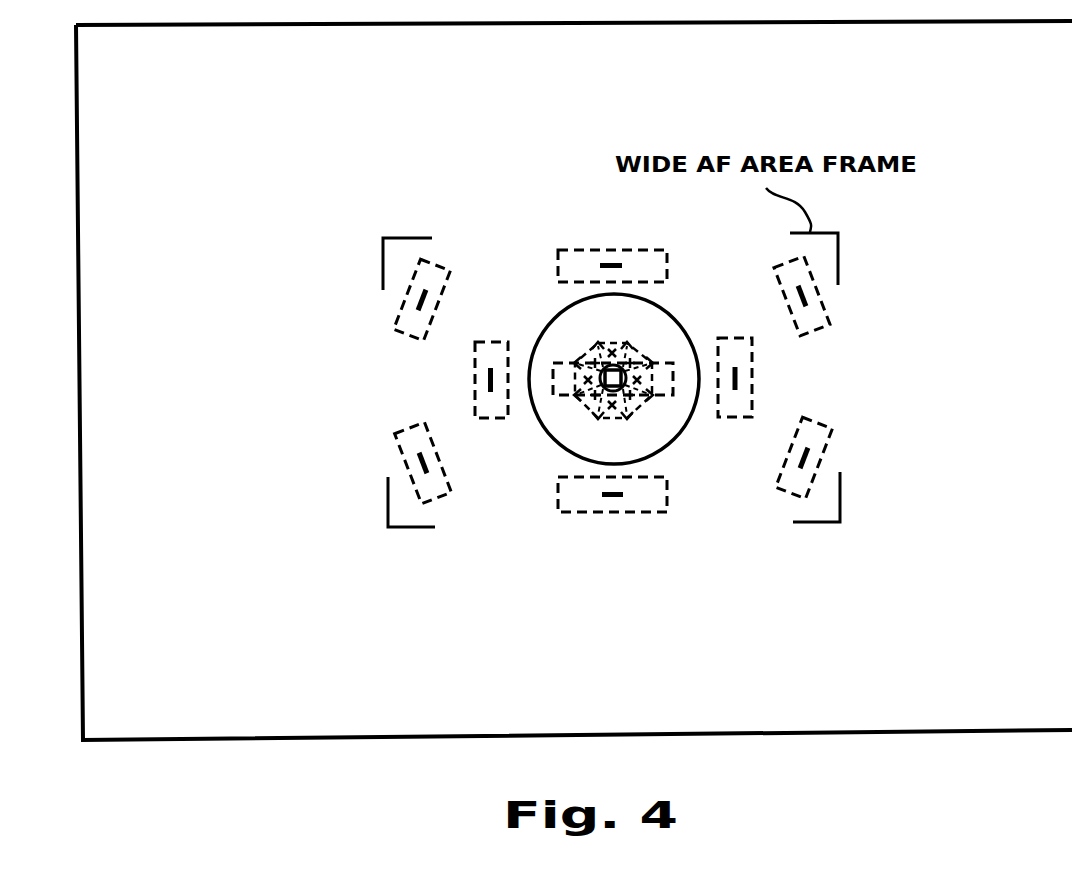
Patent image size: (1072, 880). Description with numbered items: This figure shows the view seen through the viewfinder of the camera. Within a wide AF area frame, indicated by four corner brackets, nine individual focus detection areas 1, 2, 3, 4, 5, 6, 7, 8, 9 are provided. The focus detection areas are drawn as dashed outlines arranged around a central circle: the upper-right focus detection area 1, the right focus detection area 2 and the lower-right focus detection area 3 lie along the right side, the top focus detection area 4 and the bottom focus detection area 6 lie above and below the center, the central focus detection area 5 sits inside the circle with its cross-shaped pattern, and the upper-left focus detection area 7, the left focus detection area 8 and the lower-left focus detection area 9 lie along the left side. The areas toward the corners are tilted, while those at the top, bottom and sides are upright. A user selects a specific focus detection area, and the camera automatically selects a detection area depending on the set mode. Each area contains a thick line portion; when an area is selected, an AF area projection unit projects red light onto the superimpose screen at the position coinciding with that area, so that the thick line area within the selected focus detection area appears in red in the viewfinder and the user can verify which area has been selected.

The focus detection area 1 is at (812, 309).
The focus detection area 2 is at (740, 353).
The focus detection area 3 is at (820, 425).
The focus detection area 4 is at (645, 258).
The focus detection area 5 is at (642, 402).
The focus detection area 6 is at (644, 498).
The focus detection area 7 is at (432, 265).
The focus detection area 8 is at (493, 343).
The focus detection area 9 is at (440, 500).